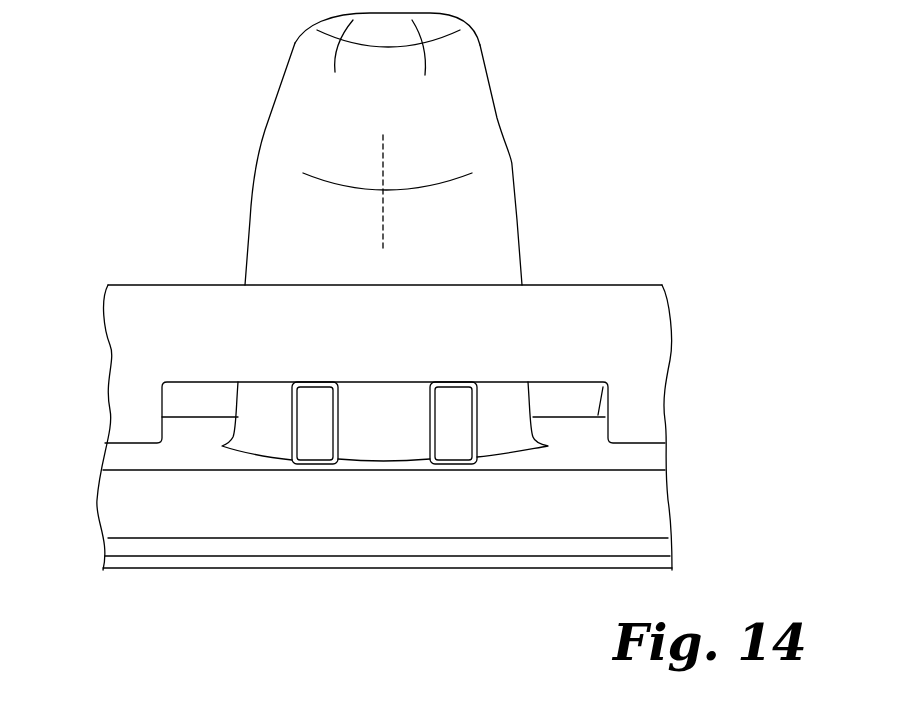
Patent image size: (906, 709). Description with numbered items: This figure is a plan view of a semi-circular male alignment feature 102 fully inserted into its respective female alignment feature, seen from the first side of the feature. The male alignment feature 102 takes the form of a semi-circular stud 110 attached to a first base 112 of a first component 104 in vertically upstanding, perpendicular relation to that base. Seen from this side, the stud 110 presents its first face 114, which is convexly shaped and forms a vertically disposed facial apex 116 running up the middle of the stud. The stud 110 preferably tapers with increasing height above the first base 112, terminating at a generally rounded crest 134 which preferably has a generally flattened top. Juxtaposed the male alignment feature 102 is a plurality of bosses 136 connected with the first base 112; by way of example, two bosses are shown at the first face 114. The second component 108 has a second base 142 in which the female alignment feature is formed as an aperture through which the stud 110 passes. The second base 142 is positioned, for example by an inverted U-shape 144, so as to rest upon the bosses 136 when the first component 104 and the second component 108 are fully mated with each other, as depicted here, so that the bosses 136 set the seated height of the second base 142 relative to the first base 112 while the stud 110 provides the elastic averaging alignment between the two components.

The semi-circular male alignment feature 102 is at (515, 220).
The semi-circular stud 110 is at (497, 118).
The rounded crest 134 is at (460, 53).
The facial apex 116 is at (382, 165).
The first face 114 is at (277, 218).
The second component 108 is at (668, 272).
The second base 142 is at (137, 283).
The inverted U-shape 144 is at (585, 445).
The bosses 136 is at (313, 380).
The first base 112 is at (122, 460).
The first component 104 is at (90, 547).